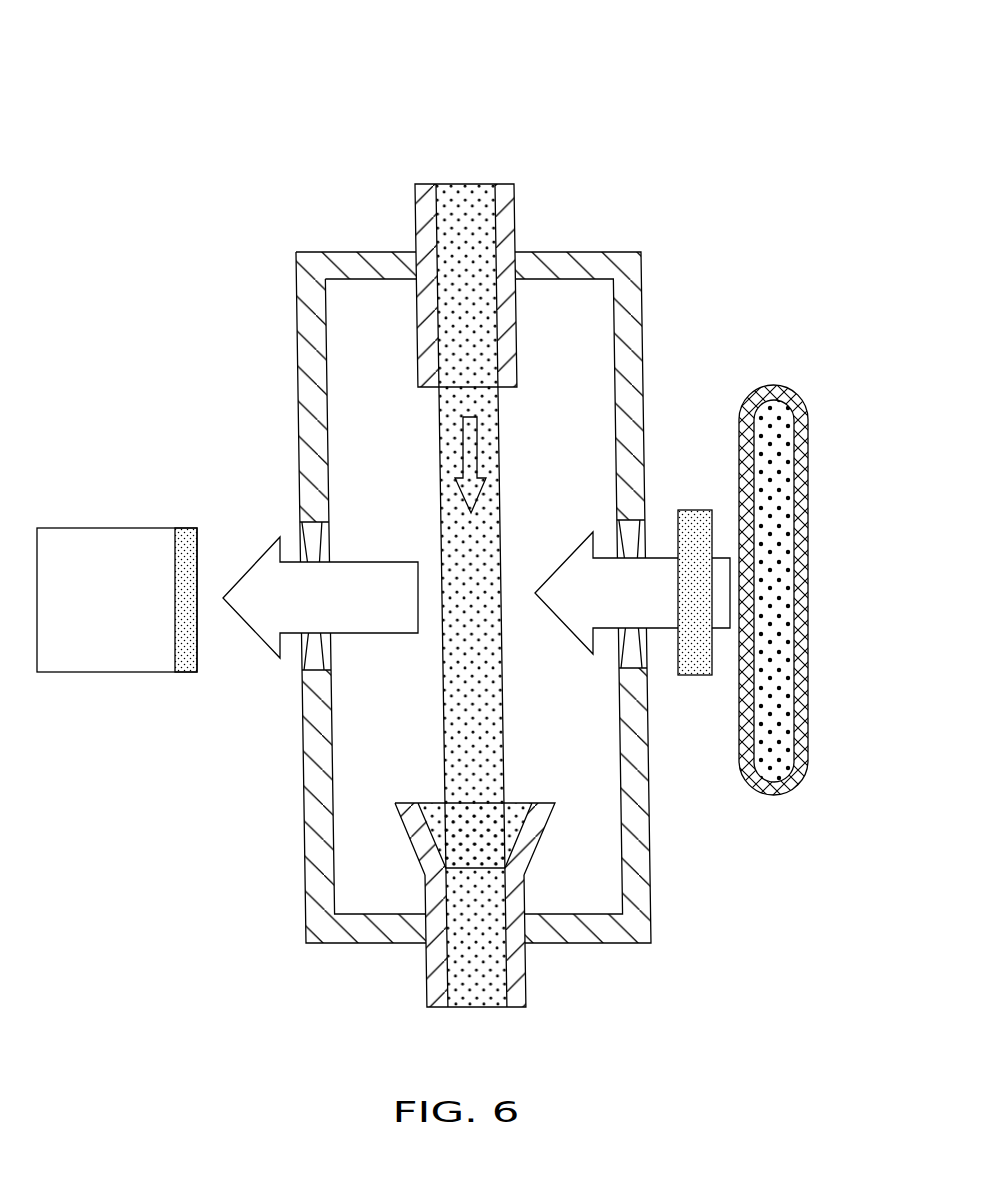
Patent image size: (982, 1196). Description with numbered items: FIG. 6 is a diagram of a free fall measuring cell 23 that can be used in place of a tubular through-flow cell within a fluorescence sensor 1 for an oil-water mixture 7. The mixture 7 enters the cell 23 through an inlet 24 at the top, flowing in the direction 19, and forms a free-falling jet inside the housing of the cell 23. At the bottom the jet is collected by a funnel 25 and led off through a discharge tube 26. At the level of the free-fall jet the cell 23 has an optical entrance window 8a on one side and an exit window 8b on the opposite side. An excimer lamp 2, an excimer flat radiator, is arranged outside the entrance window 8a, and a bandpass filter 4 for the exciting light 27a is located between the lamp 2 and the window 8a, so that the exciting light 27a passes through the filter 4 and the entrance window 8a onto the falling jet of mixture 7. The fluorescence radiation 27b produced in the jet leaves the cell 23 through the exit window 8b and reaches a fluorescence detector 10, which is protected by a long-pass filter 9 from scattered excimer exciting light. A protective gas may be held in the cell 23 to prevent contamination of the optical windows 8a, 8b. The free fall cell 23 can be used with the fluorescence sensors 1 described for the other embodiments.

The fluorescence sensor 1 is at (344, 78).
The excimer lamp 2 is at (822, 630).
The bandpass filter 4 is at (693, 510).
The oil-water mixture 7 is at (497, 752).
The optical entrance window 8a is at (647, 655).
The exit window 8b is at (308, 660).
The long-pass filter 9 is at (183, 527).
The fluorescence detector 10 is at (91, 616).
The flow direction 19 is at (469, 453).
The free fall measuring cell 23 is at (290, 245).
The inlet 24 is at (423, 322).
The funnel 25 is at (413, 832).
The discharge tube 26 is at (435, 965).
The exciting light 27a is at (616, 613).
The fluorescence radiation 27b is at (313, 613).